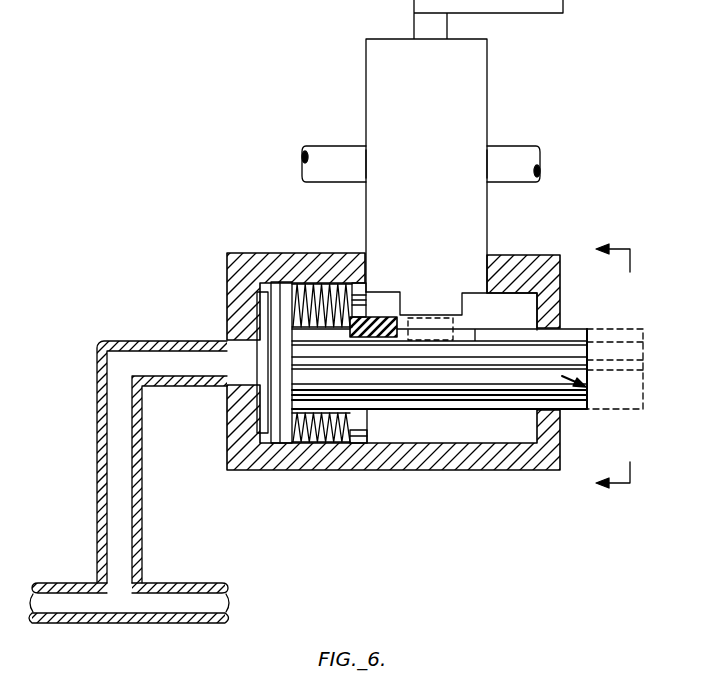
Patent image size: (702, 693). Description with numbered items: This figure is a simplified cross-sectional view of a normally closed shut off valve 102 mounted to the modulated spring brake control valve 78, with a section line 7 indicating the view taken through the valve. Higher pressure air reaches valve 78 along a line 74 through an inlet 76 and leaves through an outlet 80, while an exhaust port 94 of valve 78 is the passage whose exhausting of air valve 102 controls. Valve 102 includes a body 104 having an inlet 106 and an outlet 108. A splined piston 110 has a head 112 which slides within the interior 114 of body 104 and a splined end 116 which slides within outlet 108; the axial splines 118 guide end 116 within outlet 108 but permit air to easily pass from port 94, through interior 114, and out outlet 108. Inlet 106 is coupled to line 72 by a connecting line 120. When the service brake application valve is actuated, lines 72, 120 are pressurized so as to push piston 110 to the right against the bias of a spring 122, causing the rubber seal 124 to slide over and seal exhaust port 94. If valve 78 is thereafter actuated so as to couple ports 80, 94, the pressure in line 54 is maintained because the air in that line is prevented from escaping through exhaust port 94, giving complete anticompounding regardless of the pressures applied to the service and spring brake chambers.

The section line 7- 7 is at (605, 368).
The line 54 is at (520, 146).
The line 72 is at (72, 625).
The line 74 is at (332, 146).
The inlet 76 is at (366, 146).
The modulated spring brake control valve 78 is at (443, 124).
The outlet 80 is at (489, 146).
The exhaust port 94 is at (437, 307).
The shut off valve 102 is at (414, 477).
The body 104 is at (562, 437).
The inlet 106 is at (240, 363).
The outlet 108 is at (553, 338).
The splined piston 110 is at (590, 392).
The head 112 is at (274, 445).
The interior 114 is at (490, 422).
The splined end 116 is at (588, 350).
The axial splines 118 is at (586, 331).
The connecting line 120 is at (142, 530).
The spring 122 is at (325, 445).
The rubber seal 124 is at (385, 312).